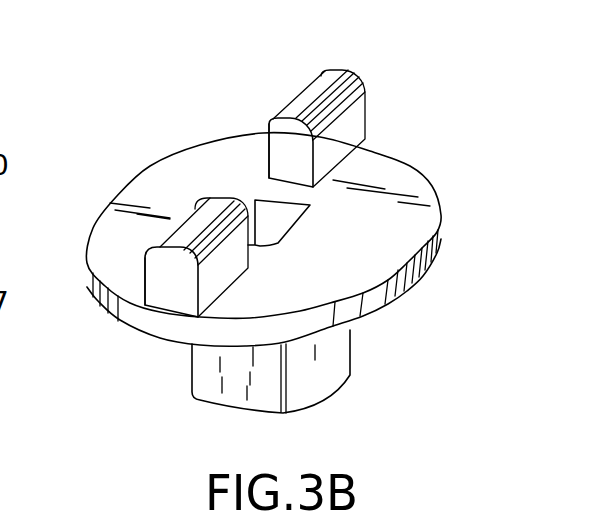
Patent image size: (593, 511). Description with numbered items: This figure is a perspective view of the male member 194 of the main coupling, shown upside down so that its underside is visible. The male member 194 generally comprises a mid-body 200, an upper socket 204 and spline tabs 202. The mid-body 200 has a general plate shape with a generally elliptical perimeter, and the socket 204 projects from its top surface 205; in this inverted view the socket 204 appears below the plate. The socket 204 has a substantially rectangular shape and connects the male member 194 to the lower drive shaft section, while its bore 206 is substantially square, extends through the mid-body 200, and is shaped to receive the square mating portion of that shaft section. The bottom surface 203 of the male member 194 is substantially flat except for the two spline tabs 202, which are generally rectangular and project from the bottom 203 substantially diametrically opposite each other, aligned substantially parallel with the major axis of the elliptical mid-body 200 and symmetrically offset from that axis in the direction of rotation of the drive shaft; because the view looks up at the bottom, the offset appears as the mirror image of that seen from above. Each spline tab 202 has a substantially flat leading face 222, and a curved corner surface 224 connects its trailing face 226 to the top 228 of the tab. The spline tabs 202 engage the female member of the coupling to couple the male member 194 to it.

The male member 194 is at (443, 218).
The mid-body 200 is at (193, 155).
The spline tabs 202 is at (349, 115).
The bottom surface 203 is at (313, 283).
The upper socket 204 is at (323, 387).
The top surface 205 is at (392, 302).
The bore 206 is at (300, 218).
The leading face 222 is at (272, 115).
The curved corner surface 224 is at (348, 80).
The trailing face 226 is at (392, 160).
The top 228 is at (317, 87).